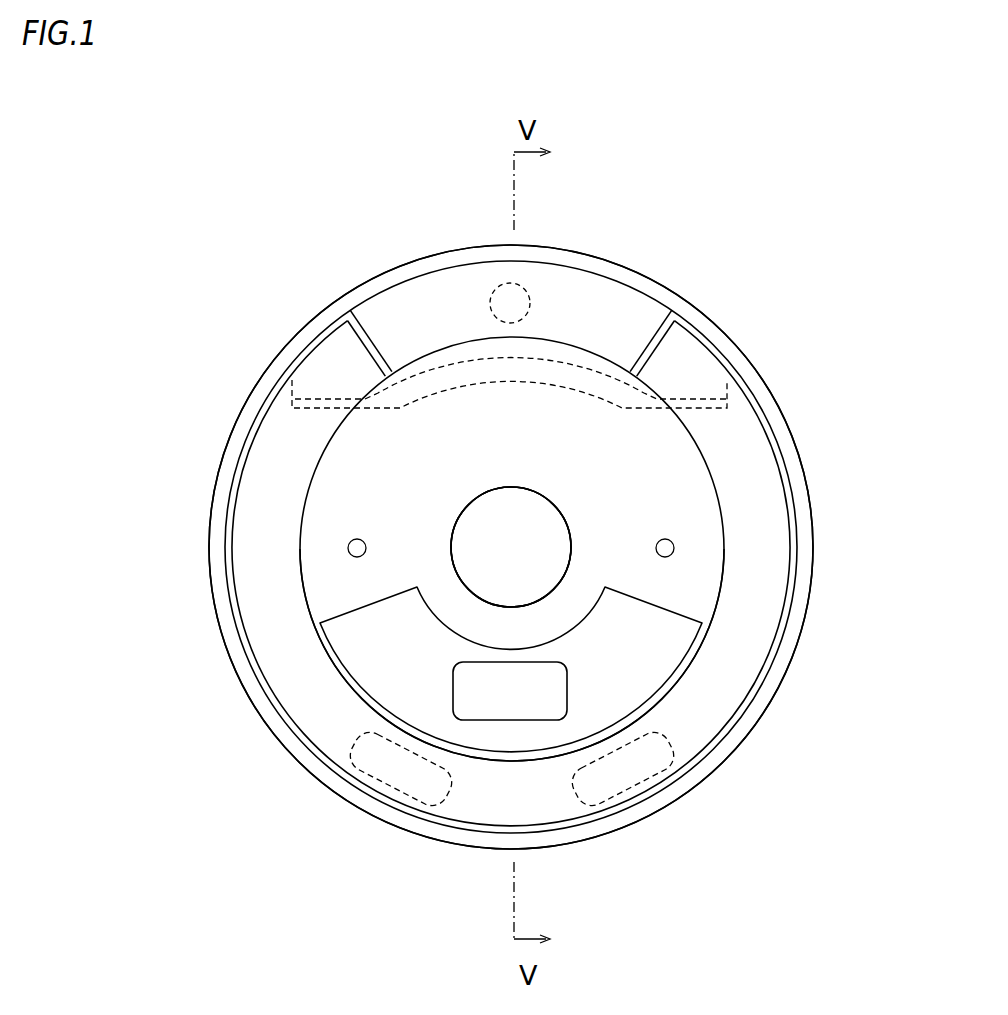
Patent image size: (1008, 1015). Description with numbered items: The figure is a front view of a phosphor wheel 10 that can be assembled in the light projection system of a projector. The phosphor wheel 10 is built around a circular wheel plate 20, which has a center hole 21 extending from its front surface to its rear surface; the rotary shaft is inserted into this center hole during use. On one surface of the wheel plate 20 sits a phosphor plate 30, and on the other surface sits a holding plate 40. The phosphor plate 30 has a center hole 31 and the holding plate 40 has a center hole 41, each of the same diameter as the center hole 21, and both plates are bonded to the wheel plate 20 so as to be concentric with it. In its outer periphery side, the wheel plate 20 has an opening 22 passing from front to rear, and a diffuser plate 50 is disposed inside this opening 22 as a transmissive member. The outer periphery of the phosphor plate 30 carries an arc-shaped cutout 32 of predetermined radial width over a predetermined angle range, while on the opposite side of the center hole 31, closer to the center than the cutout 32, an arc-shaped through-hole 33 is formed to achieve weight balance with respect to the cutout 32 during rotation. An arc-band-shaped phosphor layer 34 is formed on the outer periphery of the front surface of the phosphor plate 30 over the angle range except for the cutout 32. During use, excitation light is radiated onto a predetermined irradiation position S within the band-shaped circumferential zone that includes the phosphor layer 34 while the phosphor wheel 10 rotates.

The phosphor wheel 10 is at (740, 289).
The wheel plate 20 is at (213, 452).
The center hole 21 is at (473, 541).
The opening 22 is at (472, 383).
The phosphor plate 30 is at (797, 548).
The center hole 31 is at (342, 574).
The cutout 32 is at (650, 337).
The through-hole 33 is at (587, 615).
The phosphor layer 34 is at (310, 710).
The holding plate 40 is at (463, 547).
The center hole 41 is at (363, 574).
The diffuser plate 50 is at (410, 320).
The irradiation position S is at (497, 289).